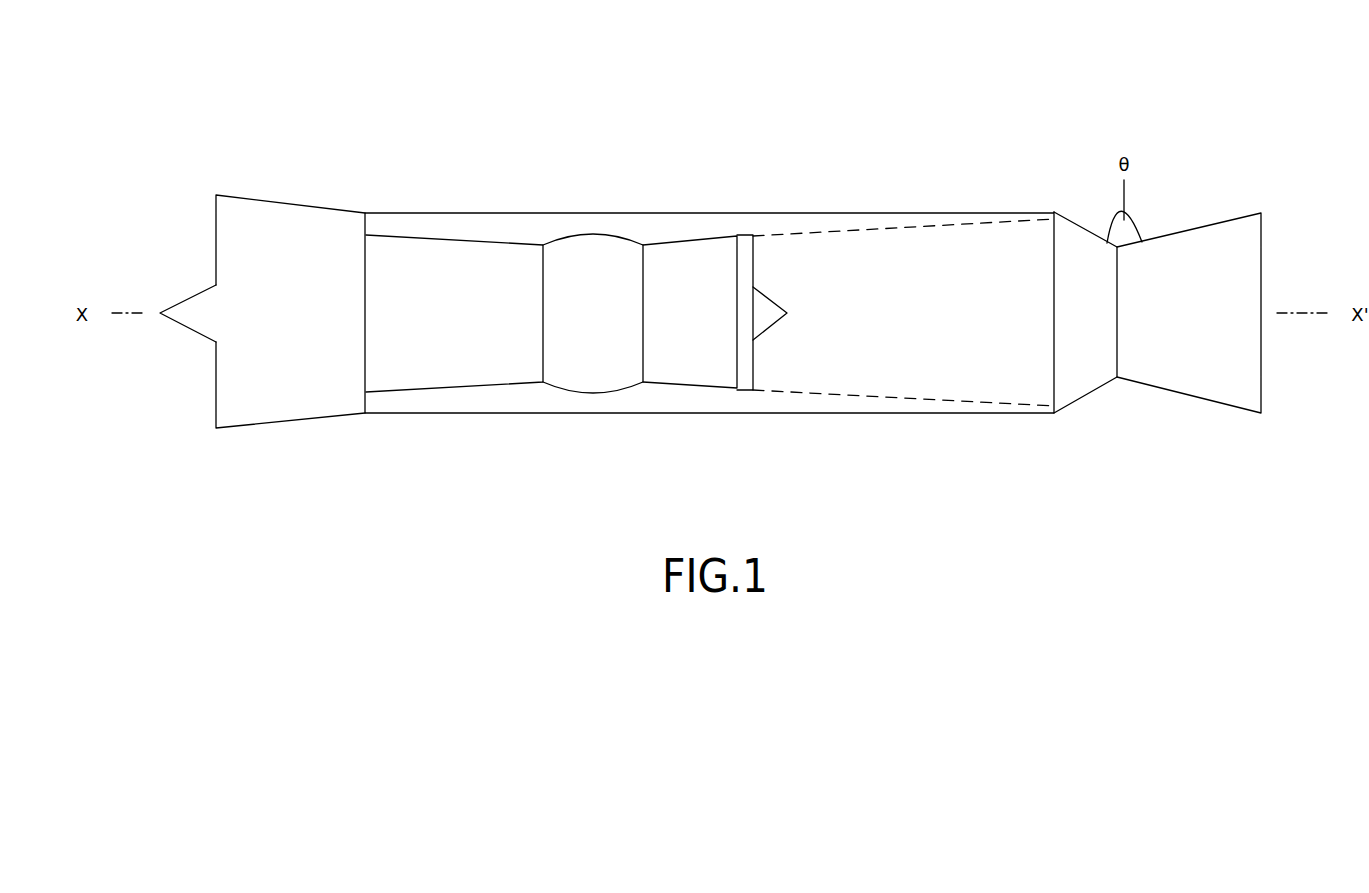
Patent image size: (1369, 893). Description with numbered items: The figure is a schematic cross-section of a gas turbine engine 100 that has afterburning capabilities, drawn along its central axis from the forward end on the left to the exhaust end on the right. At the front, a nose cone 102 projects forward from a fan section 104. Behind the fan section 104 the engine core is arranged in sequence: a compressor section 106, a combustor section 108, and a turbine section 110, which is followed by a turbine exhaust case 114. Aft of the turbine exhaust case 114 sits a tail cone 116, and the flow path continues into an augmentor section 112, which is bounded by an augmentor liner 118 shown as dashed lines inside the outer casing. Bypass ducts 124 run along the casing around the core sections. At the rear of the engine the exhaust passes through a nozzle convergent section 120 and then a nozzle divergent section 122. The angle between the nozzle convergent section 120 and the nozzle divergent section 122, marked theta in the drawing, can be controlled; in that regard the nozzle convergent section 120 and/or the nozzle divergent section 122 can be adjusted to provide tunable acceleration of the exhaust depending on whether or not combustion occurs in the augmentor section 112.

The gas turbine engine 100 is at (284, 56).
The nose cone 102 is at (192, 330).
The fan section 104 is at (262, 215).
The compressor section 106 is at (385, 250).
The combustor section 108 is at (589, 260).
The turbine section 110 is at (687, 268).
The augmentor section 112 is at (792, 372).
The turbine exhaust case 114 is at (738, 235).
The tail cone 116 is at (775, 293).
The augmentor liner 118 is at (892, 393).
The nozzle convergent section 120 is at (1082, 388).
The nozzle divergent section 122 is at (1233, 390).
The bypass ducts 124 is at (487, 398).